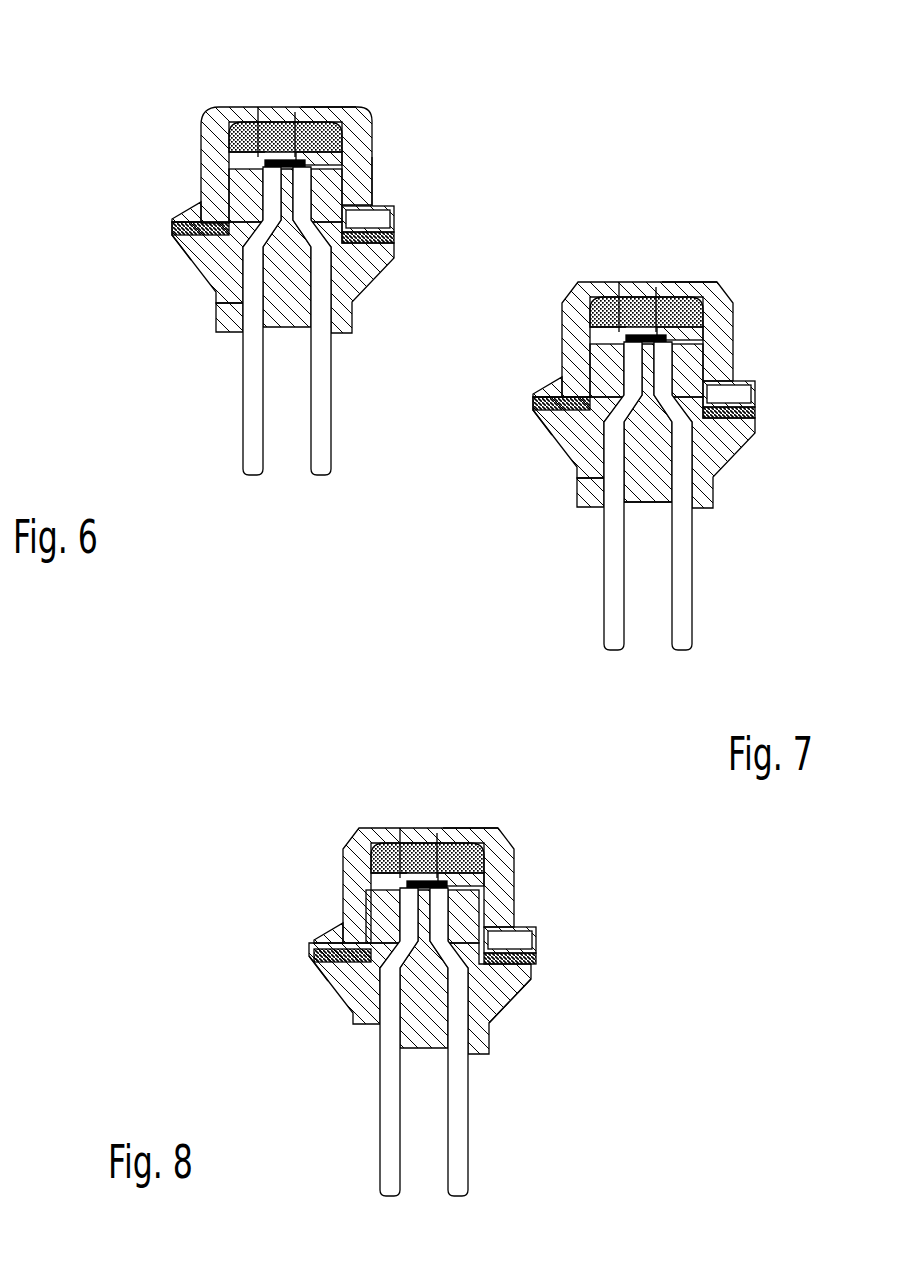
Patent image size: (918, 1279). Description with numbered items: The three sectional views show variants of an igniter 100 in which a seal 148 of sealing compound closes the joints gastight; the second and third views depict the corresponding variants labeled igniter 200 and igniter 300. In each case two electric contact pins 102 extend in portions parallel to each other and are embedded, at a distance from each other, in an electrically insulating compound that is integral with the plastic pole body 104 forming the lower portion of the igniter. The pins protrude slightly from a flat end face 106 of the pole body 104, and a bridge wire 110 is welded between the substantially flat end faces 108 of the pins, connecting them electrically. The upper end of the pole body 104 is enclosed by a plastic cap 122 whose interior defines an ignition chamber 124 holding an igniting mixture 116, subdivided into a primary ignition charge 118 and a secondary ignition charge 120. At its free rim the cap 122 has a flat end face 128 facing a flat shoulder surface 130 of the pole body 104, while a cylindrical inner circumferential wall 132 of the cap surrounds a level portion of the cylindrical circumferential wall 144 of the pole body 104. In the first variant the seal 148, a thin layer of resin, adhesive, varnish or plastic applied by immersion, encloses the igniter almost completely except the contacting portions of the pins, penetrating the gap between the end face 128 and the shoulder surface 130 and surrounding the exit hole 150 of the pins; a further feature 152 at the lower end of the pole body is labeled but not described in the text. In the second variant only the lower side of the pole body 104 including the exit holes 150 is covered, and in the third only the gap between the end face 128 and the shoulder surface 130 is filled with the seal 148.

In FIG. 6, the igniter 100 is at (195, 57).
In FIG. 7, the sensor assembly (second embodiment) 200 is at (628, 173).
In FIG. 8, the sensor assembly (third embodiment) 300 is at (337, 777).
In FIG. 6, the electric contact pins 102 is at (308, 436).
In FIG. 7, the electric contact pins 102 is at (670, 603).
In FIG. 8, the electric contact pins 102 is at (447, 1146).
In FIG. 6, the pole body 104 is at (213, 314).
In FIG. 7, the pole body 104 is at (575, 487).
In FIG. 8, the pole body 104 is at (357, 1033).
In FIG. 6, the flat end face 106 is at (229, 168).
In FIG. 7, the flat end face 106 is at (592, 343).
In FIG. 8, the flat end face 106 is at (372, 889).
In FIG. 6, the end faces 108 is at (258, 107).
In FIG. 7, the end faces 108 is at (621, 282).
In FIG. 8, the end faces 108 is at (401, 828).
In FIG. 6, the bridge wire 110 is at (296, 112).
In FIG. 7, the bridge wire 110 is at (658, 288).
In FIG. 8, the bridge wire 110 is at (438, 834).
In FIG. 6, the igniting mixture 116 is at (366, 117).
In FIG. 7, the igniting mixture 116 is at (729, 297).
In FIG. 8, the igniting mixture 116 is at (510, 843).
In FIG. 6, the primary ignition charge 118 is at (263, 163).
In FIG. 7, the primary ignition charge 118 is at (626, 338).
In FIG. 8, the primary ignition charge 118 is at (405, 887).
In FIG. 6, the secondary ignition charge 120 is at (229, 137).
In FIG. 7, the secondary ignition charge 120 is at (590, 308).
In FIG. 8, the secondary ignition charge 120 is at (371, 858).
In FIG. 6, the cap 122 is at (196, 214).
In FIG. 7, the cap 122 is at (560, 388).
In FIG. 8, the cap 122 is at (343, 932).
In FIG. 6, the ignition chamber 124 is at (323, 112).
In FIG. 7, the ignition chamber 124 is at (685, 288).
In FIG. 8, the ignition chamber 124 is at (466, 834).
In FIG. 6, the flat end face 128 is at (175, 231).
In FIG. 7, the flat end face 128 is at (538, 405).
In FIG. 8, the flat end face 128 is at (318, 955).
In FIG. 6, the shoulder surface 130 is at (178, 248).
In FIG. 7, the shoulder surface 130 is at (540, 415).
In FIG. 8, the shoulder surface 130 is at (322, 962).
In FIG. 6, the cylindrical inner circumferential wall 132 is at (390, 212).
In FIG. 7, the cylindrical inner circumferential wall 132 is at (733, 382).
In FIG. 8, the cylindrical inner circumferential wall 132 is at (514, 929).
In FIG. 6, the cylindrical circumferential wall 144 is at (395, 228).
In FIG. 7, the cylindrical circumferential wall 144 is at (756, 392).
In FIG. 8, the cylindrical circumferential wall 144 is at (533, 943).
In FIG. 6, the seal 148 is at (372, 160).
In FIG. 7, the seal 148 is at (655, 512).
In FIG. 8, the seal 148 is at (490, 998).
In FIG. 7, the exit hole 150 is at (598, 508).
In FIG. 6, the housing lip 152 is at (232, 335).